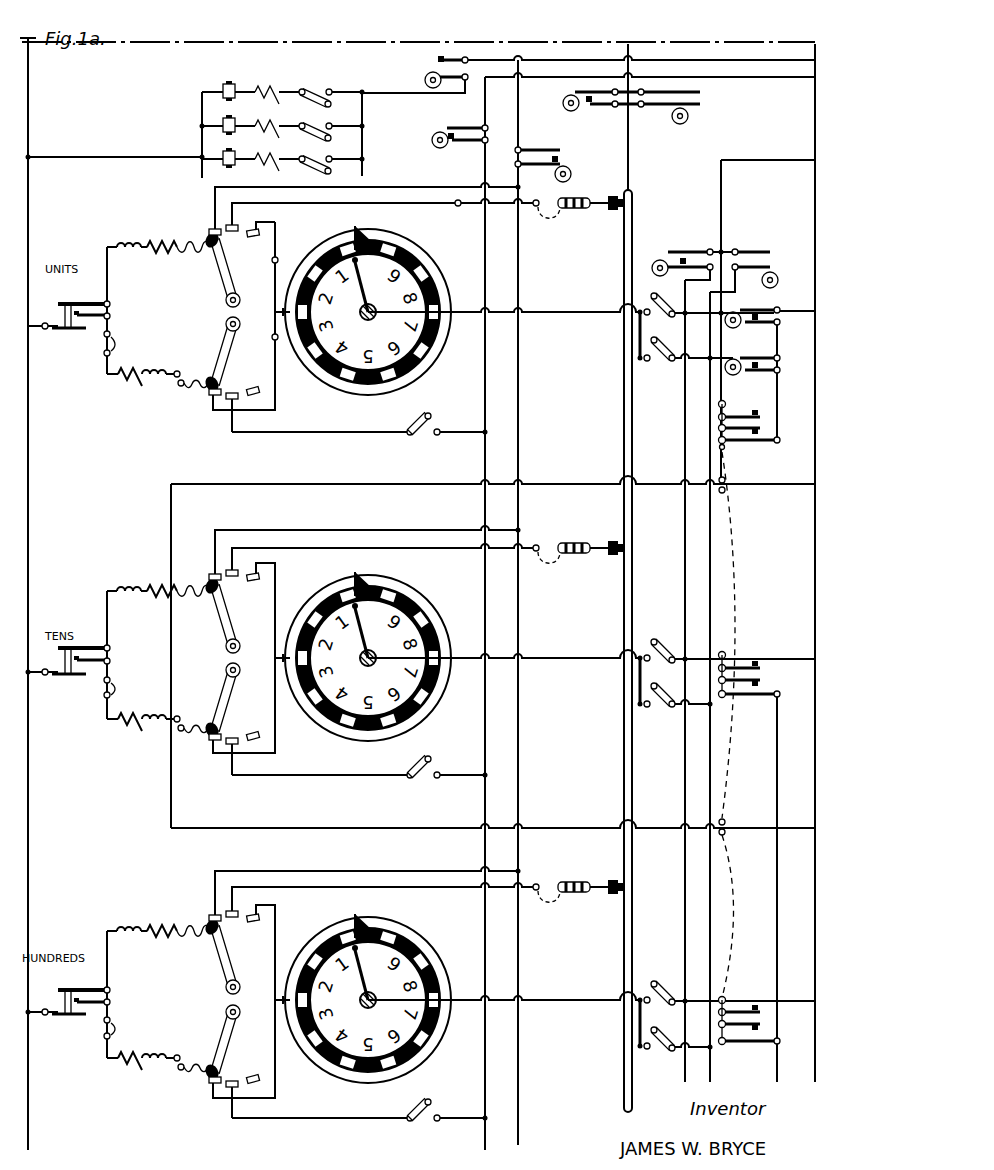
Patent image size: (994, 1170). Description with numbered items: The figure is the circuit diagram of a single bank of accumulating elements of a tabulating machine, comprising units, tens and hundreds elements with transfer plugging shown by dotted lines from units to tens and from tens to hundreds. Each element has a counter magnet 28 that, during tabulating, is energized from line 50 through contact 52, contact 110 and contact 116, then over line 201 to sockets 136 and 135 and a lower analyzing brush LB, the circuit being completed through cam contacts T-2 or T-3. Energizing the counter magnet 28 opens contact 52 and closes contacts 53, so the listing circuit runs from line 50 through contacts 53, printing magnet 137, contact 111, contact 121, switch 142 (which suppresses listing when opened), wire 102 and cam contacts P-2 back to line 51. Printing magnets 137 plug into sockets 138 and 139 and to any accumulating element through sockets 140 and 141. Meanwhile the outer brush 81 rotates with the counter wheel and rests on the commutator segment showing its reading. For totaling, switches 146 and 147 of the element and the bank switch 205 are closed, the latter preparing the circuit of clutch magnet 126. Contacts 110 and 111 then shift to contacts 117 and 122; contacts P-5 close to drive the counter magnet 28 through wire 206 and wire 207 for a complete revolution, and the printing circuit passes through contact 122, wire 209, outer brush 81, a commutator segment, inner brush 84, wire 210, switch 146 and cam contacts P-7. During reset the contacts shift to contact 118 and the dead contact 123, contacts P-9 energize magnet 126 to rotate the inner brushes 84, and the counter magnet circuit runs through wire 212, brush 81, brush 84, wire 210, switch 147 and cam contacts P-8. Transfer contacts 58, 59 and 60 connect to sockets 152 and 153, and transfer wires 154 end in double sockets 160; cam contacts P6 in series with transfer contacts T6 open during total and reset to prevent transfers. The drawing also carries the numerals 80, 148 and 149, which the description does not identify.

The counter magnet 28 is at (126, 244).
The line 50 is at (30, 116).
The line 51 is at (814, 118).
The contact 52 is at (60, 331).
The contacts 53 is at (86, 320).
The transfer contact 58 is at (754, 414).
The transfer contact 59 is at (761, 428).
The transfer contact 60 is at (762, 443).
The indicating dial 80 is at (430, 262).
The outer brush 81 is at (372, 233).
The inner brush 84 is at (361, 313).
The wire 102 is at (485, 362).
The contact 110 is at (228, 271).
The contact 111 is at (228, 374).
The contact 116 is at (226, 226).
The contact 117 is at (209, 232).
The contact 118 is at (259, 233).
The contact 121 is at (232, 401).
The contact 122 is at (214, 397).
The contact 123 is at (275, 405).
The magnet 126 is at (222, 162).
The socket 135 is at (566, 210).
The socket 136 is at (545, 210).
The printing magnet 137 is at (150, 377).
The socket 138 is at (168, 380).
The socket 139 is at (112, 352).
The socket 140 is at (180, 387).
The socket 141 is at (111, 333).
The switch 142 is at (416, 440).
The switch 146 is at (652, 297).
The switch 147 is at (667, 360).
The switch contacts 148 is at (638, 356).
The switch blades 149 is at (672, 690).
The socket 152 is at (725, 403).
The socket 153 is at (726, 448).
The wires 154 is at (562, 492).
The double sockets 160 is at (726, 494).
The line 201 is at (382, 212).
The switch 205 is at (338, 139).
The wire 206 is at (372, 187).
The wire 207 is at (745, 62).
The wire 209 is at (273, 338).
The wire 210 is at (577, 314).
The wire 212 is at (273, 261).
The lower analyzing brushes LB is at (633, 210).
The cam contacts P-9 is at (428, 64).
The cam contacts P-2 is at (460, 148).
The cam contacts P-5 is at (568, 160).
The cam contacts P-7 is at (680, 252).
The cam contacts P-8 is at (786, 242).
The cam contacts P6 is at (780, 309).
The cam contacts T-2 is at (568, 110).
The cam contacts T-3 is at (672, 123).
The transfer impulse contacts T6 is at (780, 358).